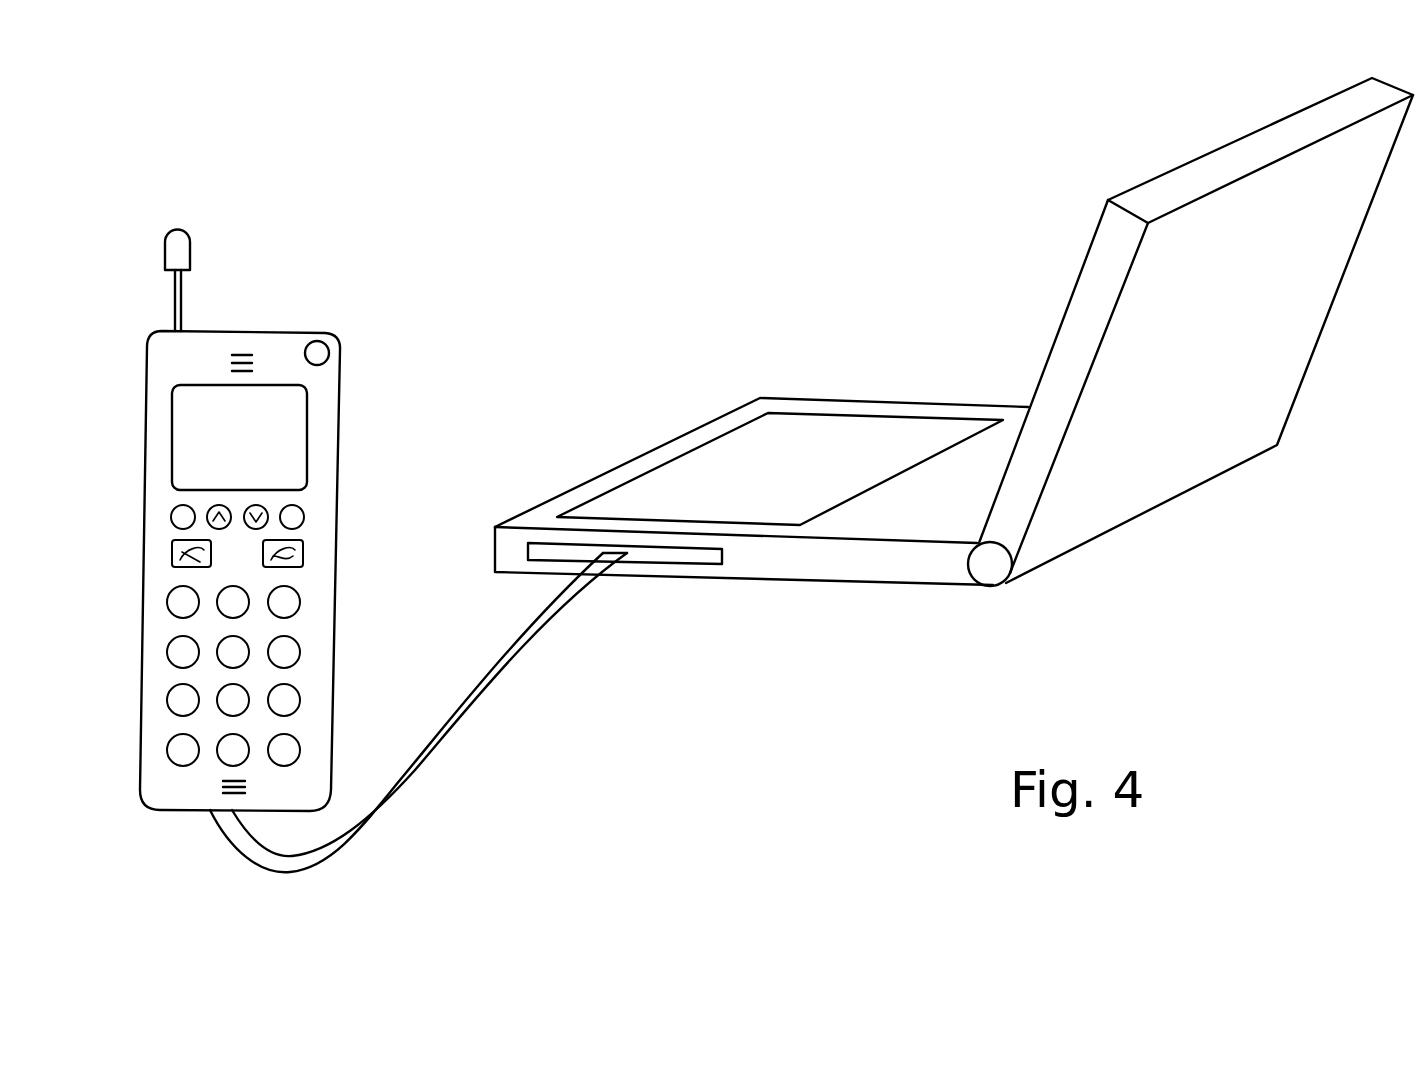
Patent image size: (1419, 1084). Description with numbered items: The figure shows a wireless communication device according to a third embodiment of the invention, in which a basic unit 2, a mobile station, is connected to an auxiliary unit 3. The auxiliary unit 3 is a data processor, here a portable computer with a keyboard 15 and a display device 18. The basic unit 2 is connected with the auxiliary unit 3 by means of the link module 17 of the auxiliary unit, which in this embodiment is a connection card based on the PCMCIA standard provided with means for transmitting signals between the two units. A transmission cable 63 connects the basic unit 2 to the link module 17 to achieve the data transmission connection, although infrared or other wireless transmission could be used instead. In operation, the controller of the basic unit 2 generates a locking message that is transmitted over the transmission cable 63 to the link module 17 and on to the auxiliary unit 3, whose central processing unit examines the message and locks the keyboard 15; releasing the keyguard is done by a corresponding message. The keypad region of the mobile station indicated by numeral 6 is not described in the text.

The basic unit 2 is at (273, 331).
The auxiliary unit 3 is at (954, 402).
The keypad 6 is at (326, 637).
The keyboard 15 is at (775, 445).
The link module 17 is at (687, 559).
The display device 18 is at (1062, 320).
The transmission cable 63 is at (390, 778).